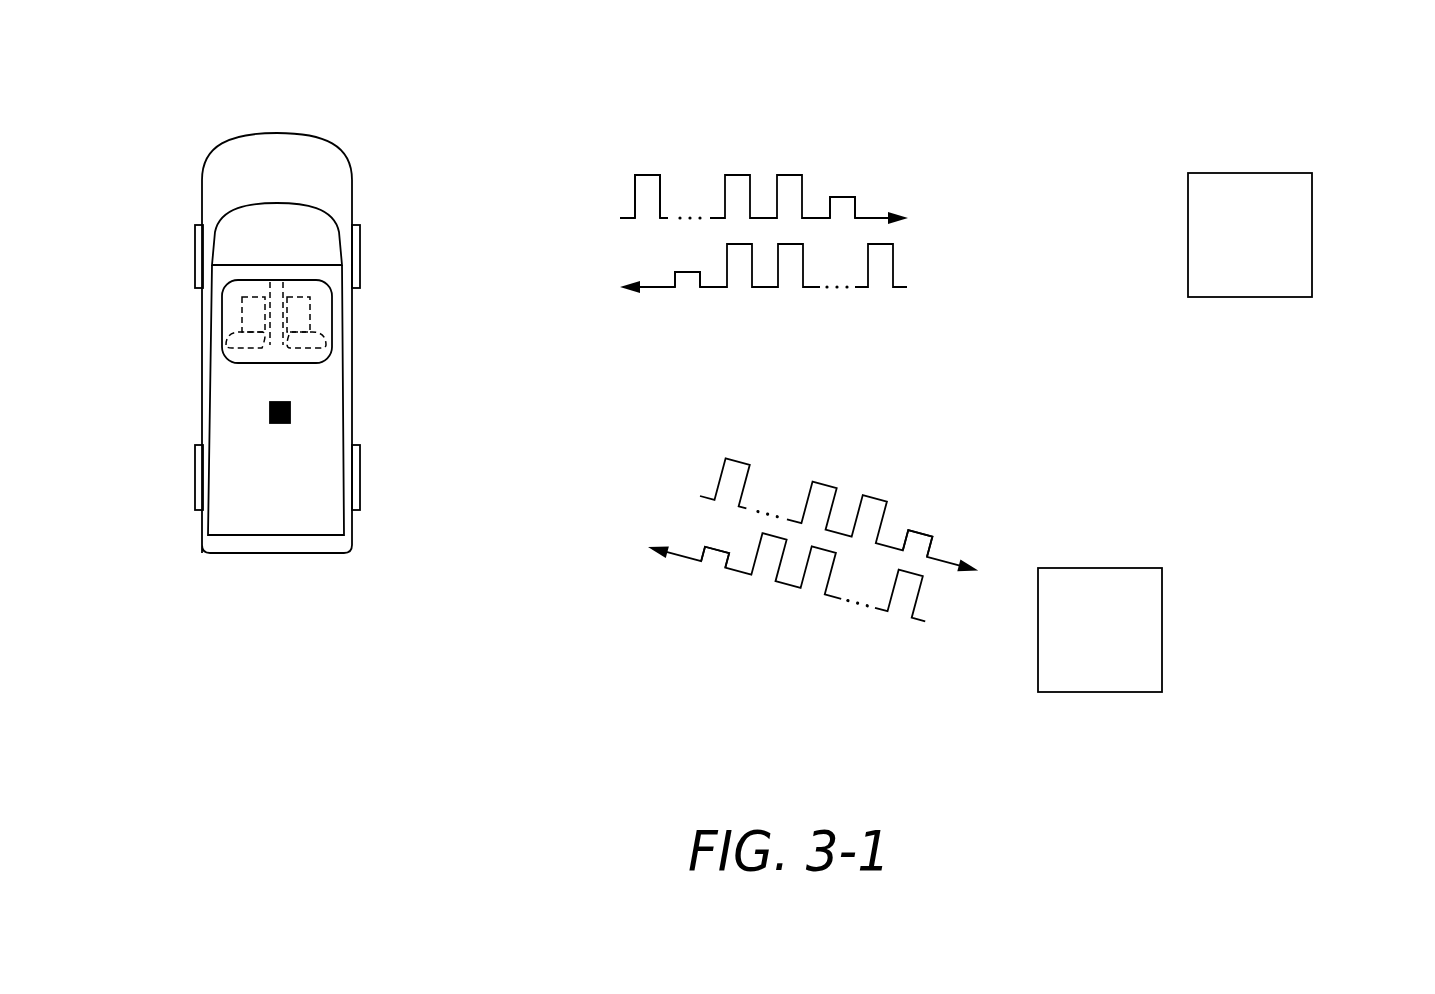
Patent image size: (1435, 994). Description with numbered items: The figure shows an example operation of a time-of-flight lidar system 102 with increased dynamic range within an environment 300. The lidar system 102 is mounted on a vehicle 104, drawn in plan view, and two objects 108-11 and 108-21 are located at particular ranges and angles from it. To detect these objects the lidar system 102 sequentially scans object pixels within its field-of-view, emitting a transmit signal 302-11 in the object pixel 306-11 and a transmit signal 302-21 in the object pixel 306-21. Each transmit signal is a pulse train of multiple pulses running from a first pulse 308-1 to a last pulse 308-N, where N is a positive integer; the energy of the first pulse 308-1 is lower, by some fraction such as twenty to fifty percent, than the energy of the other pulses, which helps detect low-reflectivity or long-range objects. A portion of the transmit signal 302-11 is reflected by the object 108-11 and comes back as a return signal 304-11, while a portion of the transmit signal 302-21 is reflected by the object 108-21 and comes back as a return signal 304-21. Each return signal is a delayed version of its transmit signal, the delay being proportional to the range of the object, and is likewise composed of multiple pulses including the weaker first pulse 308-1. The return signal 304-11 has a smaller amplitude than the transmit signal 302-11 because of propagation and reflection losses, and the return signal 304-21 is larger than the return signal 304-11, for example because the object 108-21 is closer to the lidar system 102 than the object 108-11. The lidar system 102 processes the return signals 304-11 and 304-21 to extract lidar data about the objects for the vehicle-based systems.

The environment 300 is at (1275, 28).
The vehicle 104 is at (219, 153).
The lidar system 102 is at (280, 423).
The object pixel 306-11 is at (748, 62).
The object pixel 306-21 is at (849, 440).
The transmit signal 302-11 is at (870, 217).
The transmit signal 302-21 is at (703, 493).
The return signal 304-11 is at (903, 288).
The return signal 304-21 is at (927, 622).
The first pulse 308-1 is at (842, 193).
The pulse 308-N is at (648, 175).
The object 108-11 is at (1312, 233).
The object 108-21 is at (1162, 628).